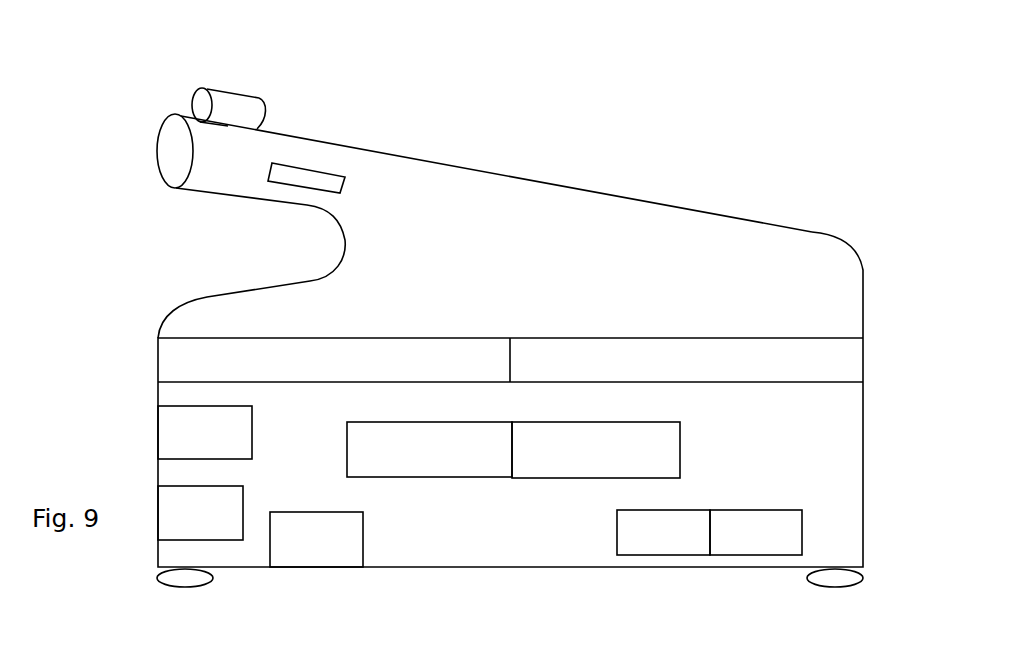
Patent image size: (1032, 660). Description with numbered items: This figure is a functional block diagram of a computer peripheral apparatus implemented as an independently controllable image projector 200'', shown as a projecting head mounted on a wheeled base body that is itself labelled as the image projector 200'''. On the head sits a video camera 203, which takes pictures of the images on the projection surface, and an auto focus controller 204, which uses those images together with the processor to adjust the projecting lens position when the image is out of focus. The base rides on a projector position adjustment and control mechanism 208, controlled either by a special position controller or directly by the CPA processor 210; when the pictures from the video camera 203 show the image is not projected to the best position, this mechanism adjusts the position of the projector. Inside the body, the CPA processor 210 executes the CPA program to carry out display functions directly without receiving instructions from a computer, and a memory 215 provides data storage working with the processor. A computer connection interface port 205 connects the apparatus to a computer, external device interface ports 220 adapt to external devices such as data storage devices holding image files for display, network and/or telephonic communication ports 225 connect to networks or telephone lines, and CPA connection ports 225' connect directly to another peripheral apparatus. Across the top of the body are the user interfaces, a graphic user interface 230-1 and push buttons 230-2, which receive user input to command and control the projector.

The image projector 200'' is at (446, 194).
The image projector 200''' is at (510, 326).
The video camera 203 is at (232, 97).
The auto focus controller 204 is at (308, 165).
The computer connection interface port 205 is at (338, 549).
The projector position adjustment and control mechanism 208 is at (198, 584).
The CPA processor 210 is at (451, 459).
The memory 215 is at (616, 459).
The external device interface ports 220 is at (683, 547).
The network and/or telephonic communication ports 225 is at (205, 432).
The CPA connection ports 225' is at (200, 513).
The graphic user interface 230-1 is at (348, 375).
The push buttons 230-2 is at (721, 375).